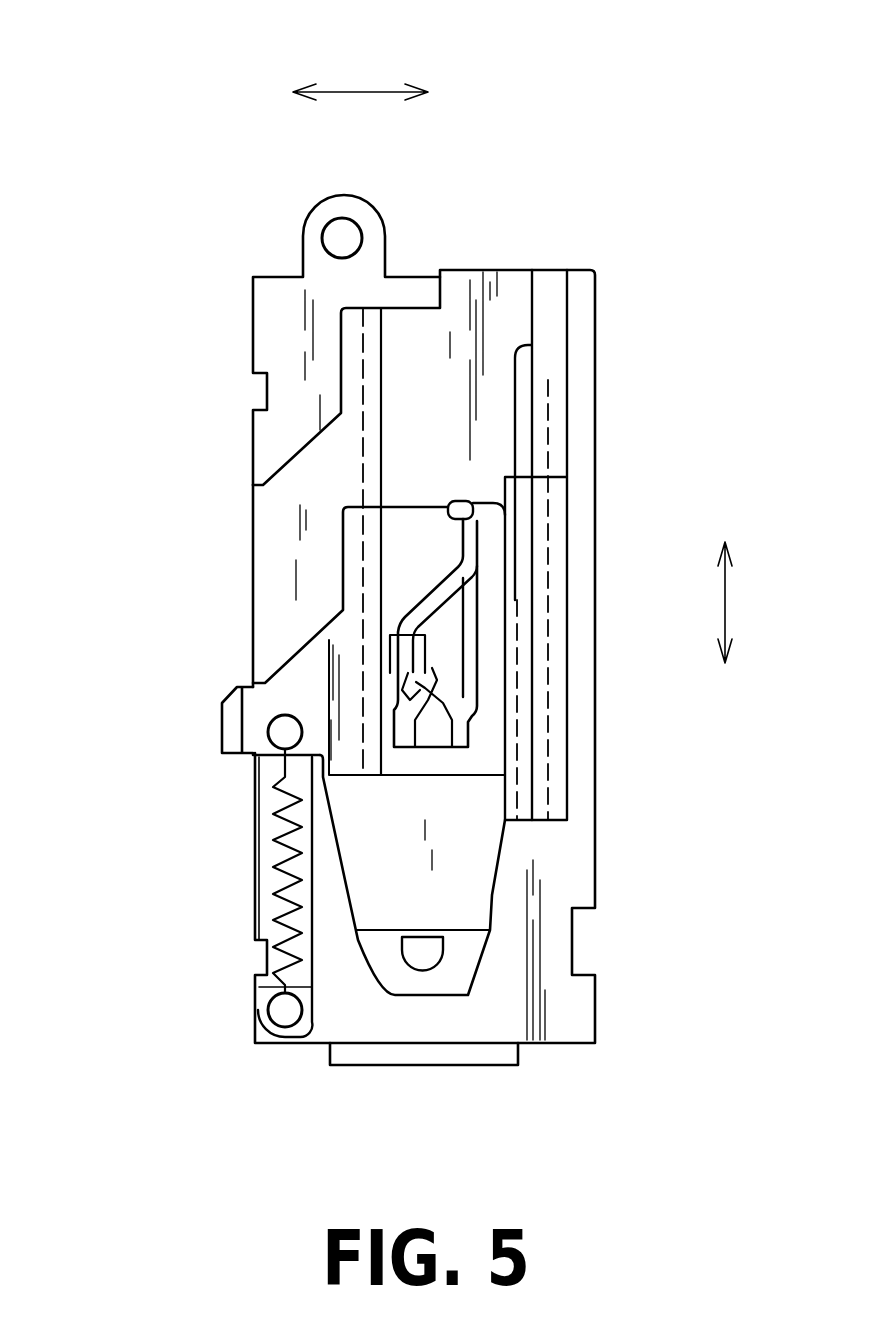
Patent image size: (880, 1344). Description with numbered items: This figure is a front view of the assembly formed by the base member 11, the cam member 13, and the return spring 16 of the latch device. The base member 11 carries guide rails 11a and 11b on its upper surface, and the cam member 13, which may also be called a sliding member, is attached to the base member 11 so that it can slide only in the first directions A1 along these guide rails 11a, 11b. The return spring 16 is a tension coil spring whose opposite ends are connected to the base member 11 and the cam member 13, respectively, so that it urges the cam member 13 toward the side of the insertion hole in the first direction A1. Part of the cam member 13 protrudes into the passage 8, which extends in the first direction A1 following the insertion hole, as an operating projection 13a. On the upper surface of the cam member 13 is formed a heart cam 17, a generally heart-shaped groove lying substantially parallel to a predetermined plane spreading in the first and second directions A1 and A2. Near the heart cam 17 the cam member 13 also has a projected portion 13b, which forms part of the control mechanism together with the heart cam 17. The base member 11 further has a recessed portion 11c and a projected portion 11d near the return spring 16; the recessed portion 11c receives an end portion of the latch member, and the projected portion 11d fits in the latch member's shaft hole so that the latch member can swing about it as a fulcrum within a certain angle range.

The passage 8 is at (110, 612).
The base member 11 is at (597, 1002).
The guide rail 11a is at (542, 308).
The guide rail 11b is at (367, 337).
The recessed portion 11c is at (493, 893).
The projected portion 11d is at (421, 962).
The cam member 13 is at (563, 688).
The operating projection 13a is at (230, 728).
The projected portion 13b is at (462, 504).
The return spring 16 is at (278, 880).
The heart cam 17 is at (470, 620).
The first direction A1 is at (725, 597).
The second direction A2 is at (362, 90).